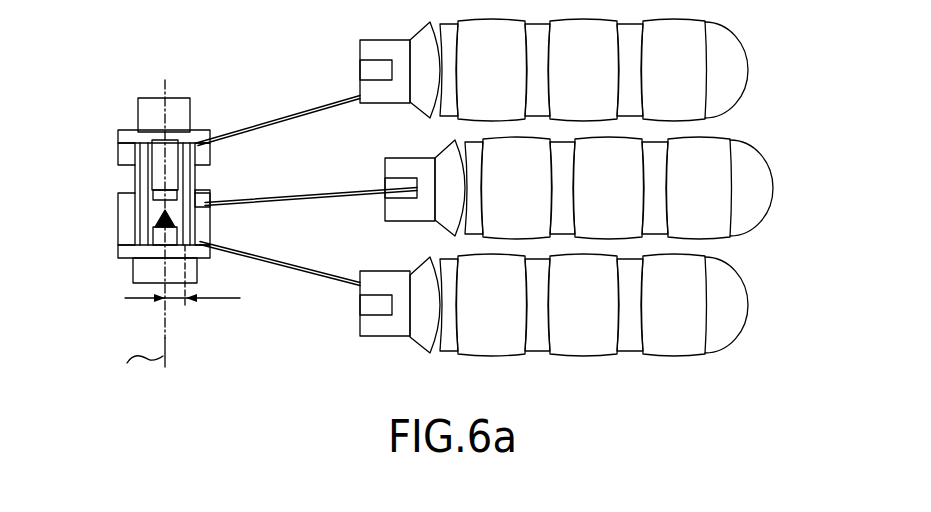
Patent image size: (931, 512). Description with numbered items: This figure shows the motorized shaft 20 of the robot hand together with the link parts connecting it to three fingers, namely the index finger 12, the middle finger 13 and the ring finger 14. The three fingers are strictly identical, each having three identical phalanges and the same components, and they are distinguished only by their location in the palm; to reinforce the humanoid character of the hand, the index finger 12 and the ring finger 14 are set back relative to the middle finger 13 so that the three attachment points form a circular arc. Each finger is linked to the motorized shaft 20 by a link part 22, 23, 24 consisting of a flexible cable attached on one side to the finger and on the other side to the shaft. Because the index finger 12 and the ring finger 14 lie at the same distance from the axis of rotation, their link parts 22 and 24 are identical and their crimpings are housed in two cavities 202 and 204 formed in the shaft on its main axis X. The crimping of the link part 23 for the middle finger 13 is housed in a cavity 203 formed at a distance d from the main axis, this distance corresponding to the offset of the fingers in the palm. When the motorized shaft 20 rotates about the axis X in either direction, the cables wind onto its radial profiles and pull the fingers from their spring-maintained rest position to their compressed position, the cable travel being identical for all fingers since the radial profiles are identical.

The index finger 12 is at (730, 68).
The middle finger 13 is at (750, 188).
The ring finger 14 is at (725, 315).
The motorized shaft 20 is at (132, 84).
The link part 22 is at (312, 108).
The link part 23 is at (347, 195).
The link part 24 is at (311, 268).
The cavity 202 is at (162, 146).
The cavity 203 is at (207, 197).
The cavity 204 is at (158, 246).